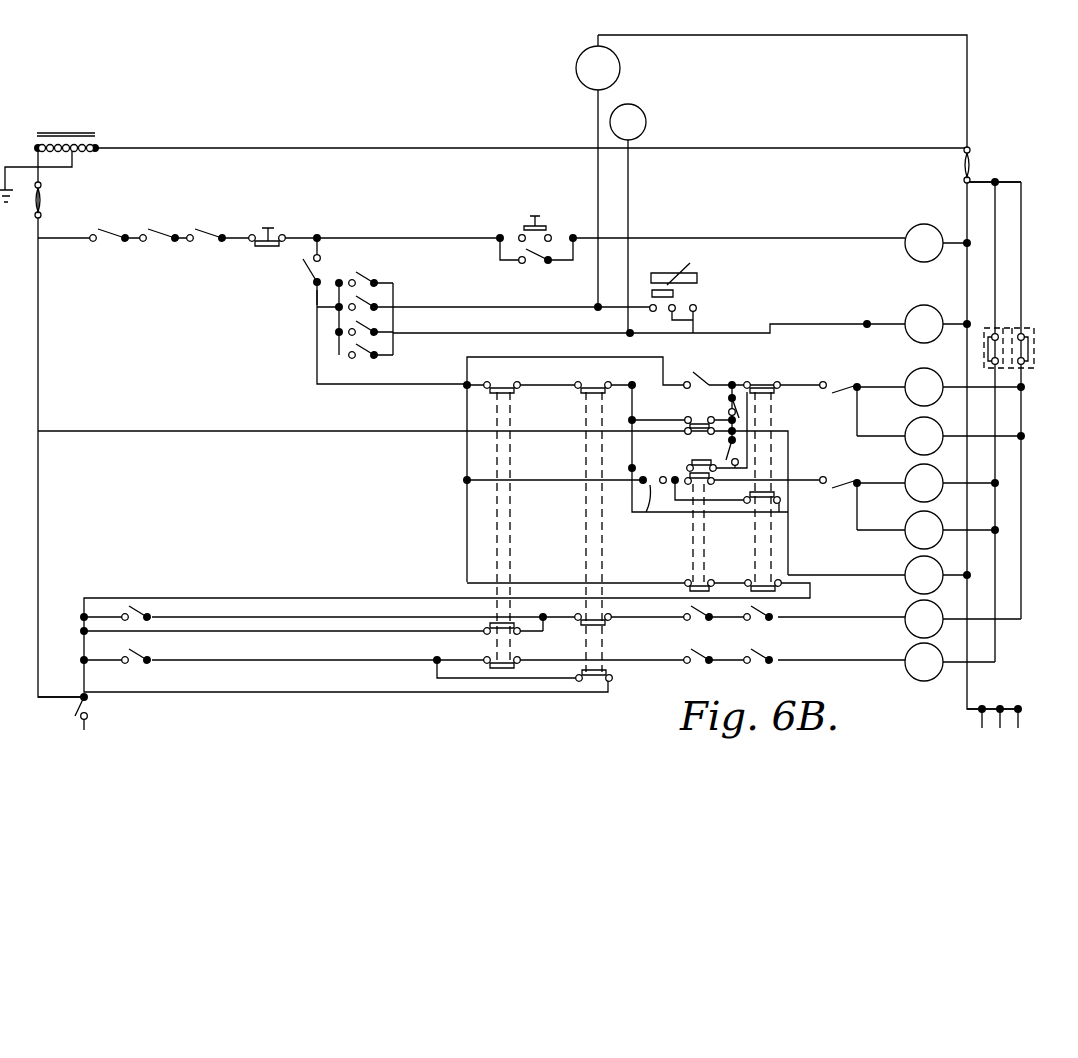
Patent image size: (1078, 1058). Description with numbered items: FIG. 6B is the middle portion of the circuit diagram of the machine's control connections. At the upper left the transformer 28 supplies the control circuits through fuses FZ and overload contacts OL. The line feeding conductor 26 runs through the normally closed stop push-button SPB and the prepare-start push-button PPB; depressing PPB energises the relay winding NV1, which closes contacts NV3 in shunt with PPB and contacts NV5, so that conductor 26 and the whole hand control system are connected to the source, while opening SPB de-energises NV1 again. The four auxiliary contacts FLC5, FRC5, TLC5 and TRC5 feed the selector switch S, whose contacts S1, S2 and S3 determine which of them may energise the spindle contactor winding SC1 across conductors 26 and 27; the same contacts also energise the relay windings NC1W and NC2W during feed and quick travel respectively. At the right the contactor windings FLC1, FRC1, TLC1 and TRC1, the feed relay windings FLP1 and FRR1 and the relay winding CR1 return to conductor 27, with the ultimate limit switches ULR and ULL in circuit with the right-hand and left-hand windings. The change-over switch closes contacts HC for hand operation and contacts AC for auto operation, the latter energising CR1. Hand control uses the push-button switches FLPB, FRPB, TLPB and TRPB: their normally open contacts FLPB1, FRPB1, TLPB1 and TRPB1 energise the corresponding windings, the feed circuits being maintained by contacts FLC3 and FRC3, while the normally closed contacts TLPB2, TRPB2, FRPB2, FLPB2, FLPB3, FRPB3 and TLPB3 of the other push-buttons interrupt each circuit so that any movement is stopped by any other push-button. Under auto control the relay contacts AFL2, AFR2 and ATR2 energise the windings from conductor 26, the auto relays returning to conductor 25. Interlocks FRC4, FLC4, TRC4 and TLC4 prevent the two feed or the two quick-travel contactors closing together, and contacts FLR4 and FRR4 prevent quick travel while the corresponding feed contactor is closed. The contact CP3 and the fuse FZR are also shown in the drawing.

The conductor 25 is at (1003, 698).
The conductor 26 is at (316, 300).
The conductor 27 is at (1004, 181).
The transformer 28 is at (37, 135).
The fuses FZ is at (42, 198).
The overload contacts OL is at (154, 267).
The stop push-button SPB is at (267, 227).
The prepare-start push-button PPB is at (555, 228).
The contacts of relay NV1 NV3 is at (540, 269).
The contacts of relay NV1 NV5 is at (307, 279).
The relay winding NV1 is at (902, 252).
The spindle contactor winding SC1 is at (903, 333).
The relay winding NC1W is at (613, 68).
The relay winding NC2W is at (642, 134).
The selector switch S is at (674, 277).
The selector switch contact S1 is at (651, 313).
The selector switch contact S2 is at (675, 305).
The selector switch contact S3 is at (697, 308).
The ultimate limit switch ULR is at (984, 355).
The ultimate limit switch ULL is at (1030, 352).
The feed-left contactor winding FLC1 is at (905, 399).
The feed-left relay winding FLP1 is at (906, 447).
The feed-right contactor winding FRC1 is at (906, 494).
The feed-right relay winding FRR1 is at (906, 540).
The relay winding CR1 is at (906, 583).
The quick-travel-left contactor winding TLC1 is at (906, 630).
The quick-travel-right contactor winding TRC1 is at (906, 672).
The feed-left contactor auxiliary contact FLC5 is at (394, 280).
The feed-right contactor auxiliary contact FRC5 is at (393, 304).
The quick-travel-left contactor auxiliary contact TLC5 is at (393, 329).
The quick-travel-right contactor auxiliary contact TRC5 is at (360, 364).
The normally closed contacts of quick-travel-left push-button TLPB2 is at (502, 382).
The normally closed contacts of quick-travel-right push-button TRPB2 is at (596, 382).
The auto feed-left relay contacts AFL2 is at (704, 376).
The normally closed contacts of feed-right push-button FRPB2 is at (768, 378).
The feed-right contactor auxiliary contact FRC4 is at (836, 393).
The hand contacts of change-over switch HC is at (696, 418).
The feed-left contactor maintaining contacts FLC3 is at (728, 400).
The auto contacts of change-over switch AC is at (714, 449).
The feed-right contactor maintaining contacts FRC3 is at (694, 452).
The normally open contacts of feed-left push-button FLPB1 is at (676, 461).
The normally closed contacts of feed-left push-button FLPB2 is at (720, 490).
The auto feed-right relay contacts AFR2 is at (630, 511).
The feed-left contactor auxiliary contact FLC4 is at (838, 486).
The normally open contacts of feed-right push-button FRPB1 is at (783, 500).
The feed-left push-button switch FLPB is at (693, 556).
The feed-right push-button switch FRPB is at (758, 560).
The quick-travel-left push-button switch TLPB is at (510, 552).
The quick-travel-right push-button switch TRPB is at (586, 577).
The normally closed contacts of feed-left push-button FLPB3 is at (688, 580).
The normally closed contacts of feed-right push-button FRPB3 is at (782, 581).
The normally open contacts of quick-travel-left push-button TLPB1 is at (487, 622).
The normally closed contacts of quick-travel-left push-button TLPB3 is at (604, 624).
The feed-left relay contacts FLR4 is at (693, 624).
The quick-travel-right contactor auxiliary contact TRC4 is at (766, 624).
The feed-right relay contacts FRR4 is at (702, 650).
The quick-travel-left contactor auxiliary contact TLC4 is at (765, 650).
The normally open contacts of quick-travel-right push-button TRPB1 is at (611, 680).
The auto quick-travel-right relay contacts ATR2 is at (148, 652).
The contact CP3 is at (98, 713).
The fuse FZR is at (964, 173).